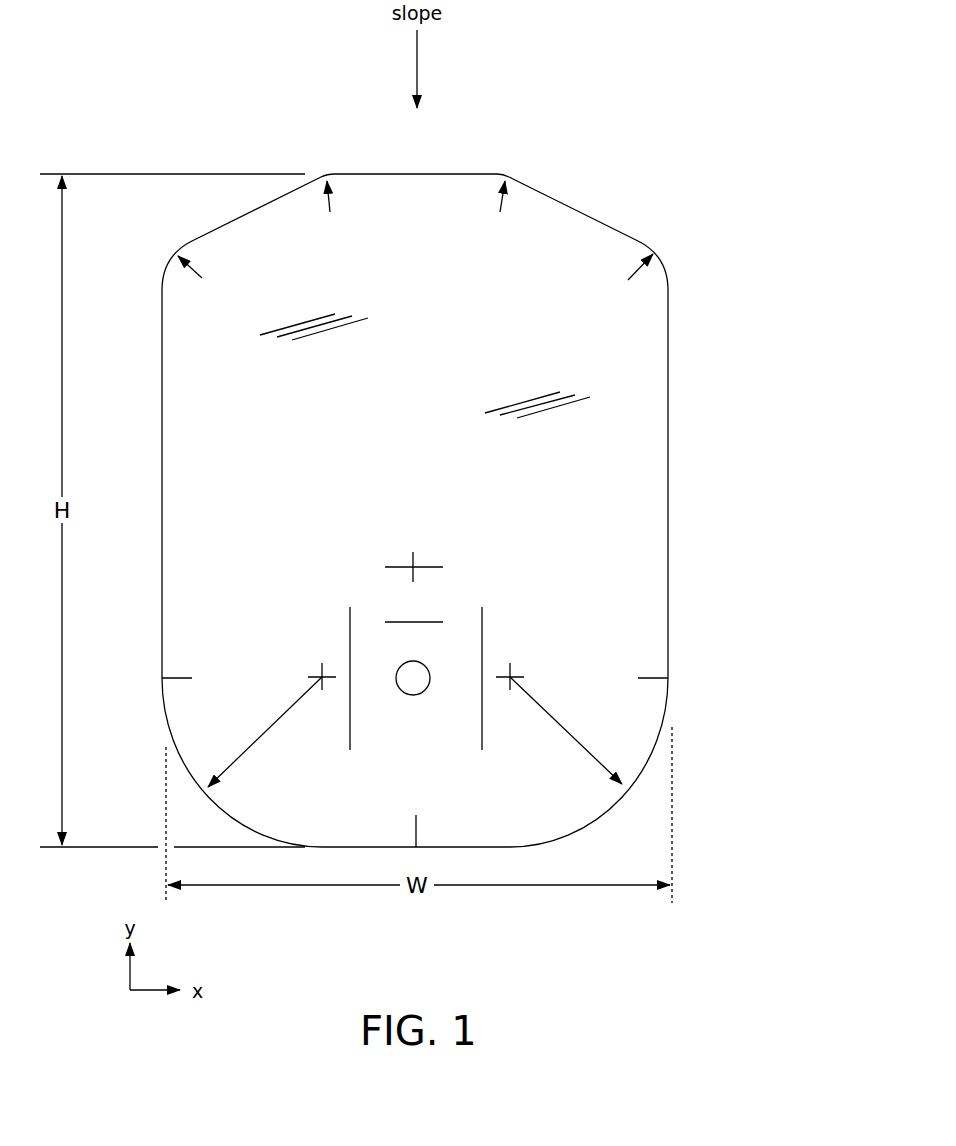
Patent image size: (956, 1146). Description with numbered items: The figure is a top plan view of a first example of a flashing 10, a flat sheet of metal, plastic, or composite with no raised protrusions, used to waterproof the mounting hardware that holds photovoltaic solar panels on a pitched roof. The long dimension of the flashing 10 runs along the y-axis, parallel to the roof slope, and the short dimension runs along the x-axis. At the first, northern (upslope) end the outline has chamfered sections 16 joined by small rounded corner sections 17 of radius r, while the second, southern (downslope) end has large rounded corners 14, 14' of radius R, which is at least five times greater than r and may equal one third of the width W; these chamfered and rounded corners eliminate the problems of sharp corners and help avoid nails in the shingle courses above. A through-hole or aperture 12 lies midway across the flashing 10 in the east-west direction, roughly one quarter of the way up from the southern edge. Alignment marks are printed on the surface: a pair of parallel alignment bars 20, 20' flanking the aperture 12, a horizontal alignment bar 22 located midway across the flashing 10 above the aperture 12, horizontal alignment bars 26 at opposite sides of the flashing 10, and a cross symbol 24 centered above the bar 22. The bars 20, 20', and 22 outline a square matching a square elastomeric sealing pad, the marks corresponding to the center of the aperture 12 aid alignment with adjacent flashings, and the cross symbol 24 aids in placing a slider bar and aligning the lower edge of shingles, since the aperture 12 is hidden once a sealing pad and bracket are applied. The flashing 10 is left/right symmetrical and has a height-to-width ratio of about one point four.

The flashing 10 is at (427, 205).
The through-hole (aperture) 12 is at (432, 663).
The large rounded corner 14 is at (633, 773).
The large rounded corner 14' is at (198, 762).
The chamfered section 16 is at (593, 213).
The small rounded corner section 17 is at (653, 248).
The alignment mark or bar 20 is at (623, 669).
The alignment mark or bar 20' is at (223, 667).
The horizontal alignment mark or bar 22 is at (395, 622).
The cross symbol 24 is at (395, 558).
The horizontal alignment mark or bar 26 is at (655, 680).